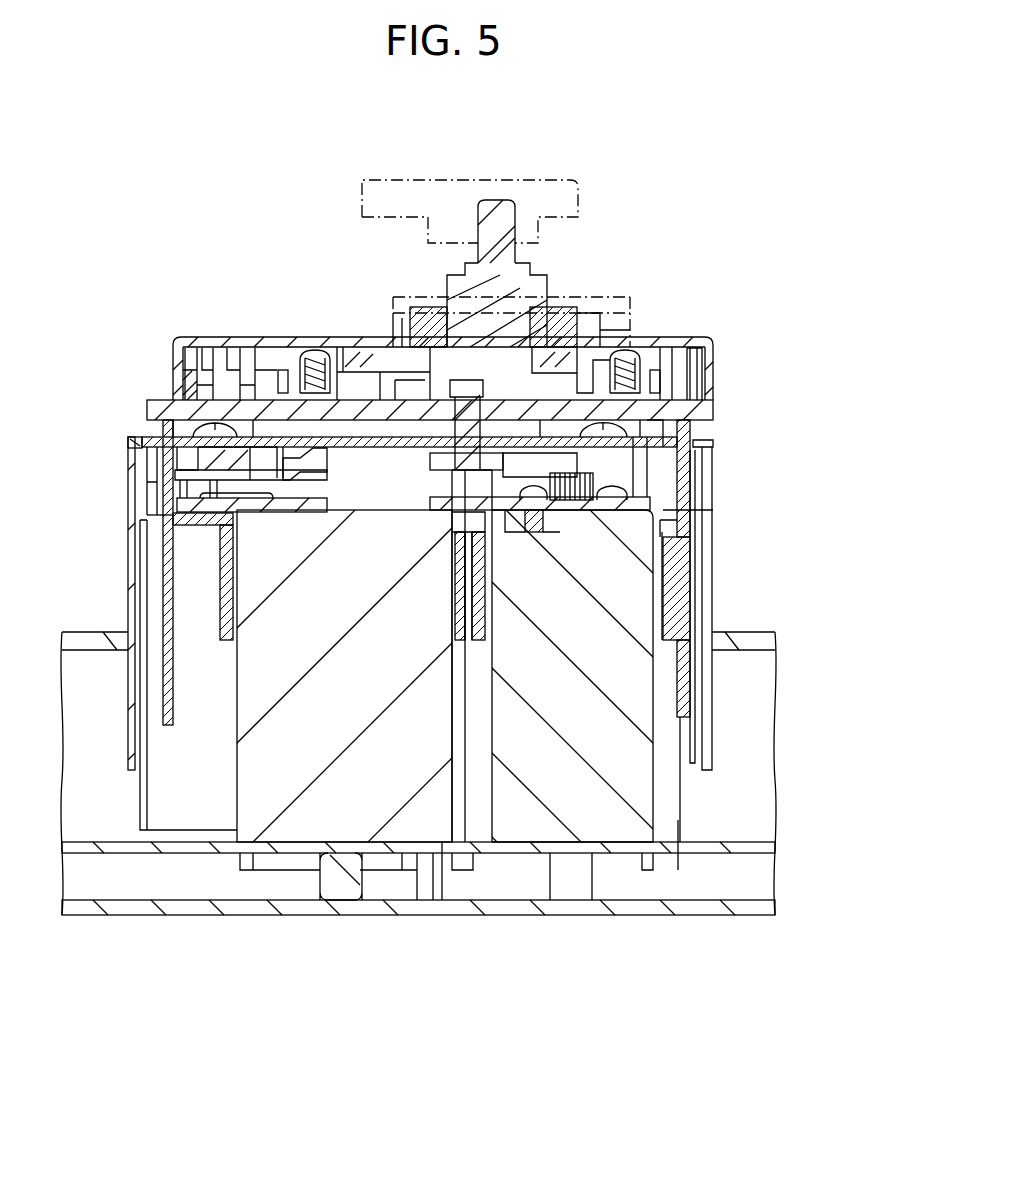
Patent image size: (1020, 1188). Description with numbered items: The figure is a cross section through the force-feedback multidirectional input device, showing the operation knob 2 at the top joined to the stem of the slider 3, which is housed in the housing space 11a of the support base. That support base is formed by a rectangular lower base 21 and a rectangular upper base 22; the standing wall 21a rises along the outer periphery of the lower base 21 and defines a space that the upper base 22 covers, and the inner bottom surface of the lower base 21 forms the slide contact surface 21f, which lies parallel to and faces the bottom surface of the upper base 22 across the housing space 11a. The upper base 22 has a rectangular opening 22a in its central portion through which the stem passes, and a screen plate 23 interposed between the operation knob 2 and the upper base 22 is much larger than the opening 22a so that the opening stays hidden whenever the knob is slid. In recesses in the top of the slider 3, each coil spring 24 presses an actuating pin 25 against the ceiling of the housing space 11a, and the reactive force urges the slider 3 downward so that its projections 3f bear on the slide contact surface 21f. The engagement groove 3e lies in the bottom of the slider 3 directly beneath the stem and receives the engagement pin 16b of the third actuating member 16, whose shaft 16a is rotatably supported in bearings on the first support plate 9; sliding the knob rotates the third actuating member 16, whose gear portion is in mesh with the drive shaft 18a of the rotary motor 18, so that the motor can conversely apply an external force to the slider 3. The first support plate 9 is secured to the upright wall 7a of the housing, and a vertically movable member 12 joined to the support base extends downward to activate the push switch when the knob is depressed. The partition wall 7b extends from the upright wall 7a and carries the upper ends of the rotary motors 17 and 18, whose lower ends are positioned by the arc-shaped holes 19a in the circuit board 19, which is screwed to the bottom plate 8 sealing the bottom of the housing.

The operation knob 2 is at (560, 180).
The slider 3 is at (445, 275).
The engagement groove 3e is at (470, 346).
The projections 3f is at (305, 398).
The upright wall 7a is at (130, 598).
The partition wall 7b is at (167, 533).
The bottom plate 8 is at (710, 915).
The first support plate 9 is at (130, 440).
The housing space 11a is at (672, 362).
The vertically movable member 12 is at (165, 697).
The third actuating member 16 is at (540, 527).
The shaft 16a is at (540, 492).
The engagement pin 16b is at (612, 462).
The rotary motor 17 is at (235, 800).
The rotary motor 18 is at (660, 752).
The drive shaft 18a is at (240, 415).
The circuit board 19 is at (722, 848).
The arc-shaped holes 19a is at (433, 853).
The lower base 21 is at (150, 410).
The standing wall 21a is at (190, 370).
The slide contact surface 21f is at (672, 398).
The upper base 22 is at (185, 337).
The opening 22a is at (565, 340).
The screen plate 23 is at (630, 297).
The coil spring 24 is at (290, 370).
The actuating pin 25 is at (313, 350).